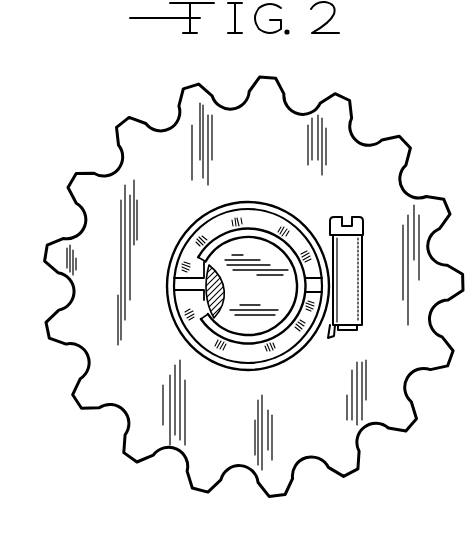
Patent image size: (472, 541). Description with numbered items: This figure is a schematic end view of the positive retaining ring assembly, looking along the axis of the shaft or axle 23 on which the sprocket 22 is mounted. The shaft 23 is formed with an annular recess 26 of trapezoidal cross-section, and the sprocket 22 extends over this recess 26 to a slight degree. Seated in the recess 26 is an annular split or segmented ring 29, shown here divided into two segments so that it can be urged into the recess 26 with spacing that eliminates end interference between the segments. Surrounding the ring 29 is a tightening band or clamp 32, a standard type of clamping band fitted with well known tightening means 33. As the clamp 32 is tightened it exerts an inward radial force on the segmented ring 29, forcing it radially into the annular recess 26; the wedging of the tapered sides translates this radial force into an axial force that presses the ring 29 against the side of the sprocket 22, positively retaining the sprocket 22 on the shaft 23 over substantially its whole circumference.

The sprocket 22 is at (340, 133).
The shaft or axle 23 is at (262, 323).
The annular recess 26 is at (200, 291).
The segmented ring 29 is at (216, 216).
The tightening band or clamp 32 is at (275, 206).
The tightening means 33 is at (350, 254).